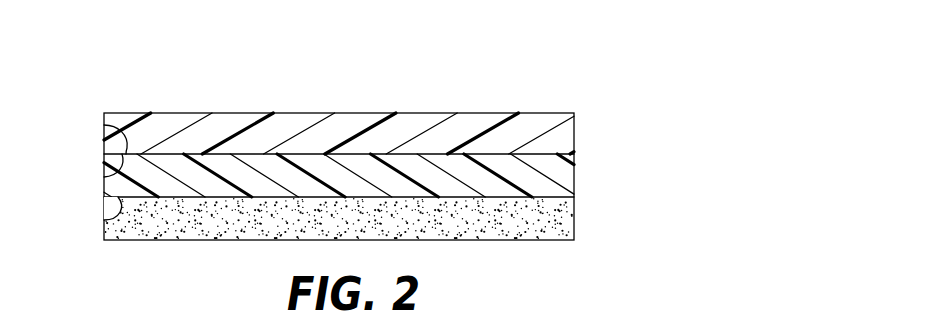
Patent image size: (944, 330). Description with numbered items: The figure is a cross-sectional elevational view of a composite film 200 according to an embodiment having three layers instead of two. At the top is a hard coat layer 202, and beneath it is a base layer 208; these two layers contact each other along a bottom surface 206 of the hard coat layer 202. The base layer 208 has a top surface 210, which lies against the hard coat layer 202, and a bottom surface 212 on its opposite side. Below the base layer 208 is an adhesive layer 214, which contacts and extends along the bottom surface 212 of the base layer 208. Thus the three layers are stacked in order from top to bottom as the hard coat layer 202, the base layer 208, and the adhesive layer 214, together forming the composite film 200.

The composite film 200 is at (493, 62).
The hard coat layer 202 is at (562, 136).
The base layer 208 is at (562, 179).
The adhesive layer 214 is at (562, 222).
The top surface 210 is at (104, 125).
The bottom surface 206 is at (104, 177).
The bottom surface 212 is at (104, 220).